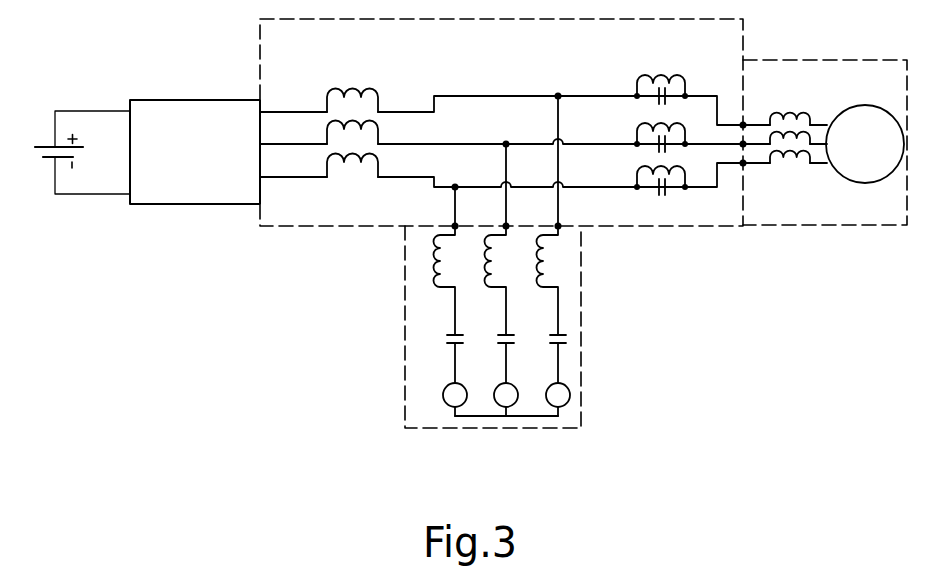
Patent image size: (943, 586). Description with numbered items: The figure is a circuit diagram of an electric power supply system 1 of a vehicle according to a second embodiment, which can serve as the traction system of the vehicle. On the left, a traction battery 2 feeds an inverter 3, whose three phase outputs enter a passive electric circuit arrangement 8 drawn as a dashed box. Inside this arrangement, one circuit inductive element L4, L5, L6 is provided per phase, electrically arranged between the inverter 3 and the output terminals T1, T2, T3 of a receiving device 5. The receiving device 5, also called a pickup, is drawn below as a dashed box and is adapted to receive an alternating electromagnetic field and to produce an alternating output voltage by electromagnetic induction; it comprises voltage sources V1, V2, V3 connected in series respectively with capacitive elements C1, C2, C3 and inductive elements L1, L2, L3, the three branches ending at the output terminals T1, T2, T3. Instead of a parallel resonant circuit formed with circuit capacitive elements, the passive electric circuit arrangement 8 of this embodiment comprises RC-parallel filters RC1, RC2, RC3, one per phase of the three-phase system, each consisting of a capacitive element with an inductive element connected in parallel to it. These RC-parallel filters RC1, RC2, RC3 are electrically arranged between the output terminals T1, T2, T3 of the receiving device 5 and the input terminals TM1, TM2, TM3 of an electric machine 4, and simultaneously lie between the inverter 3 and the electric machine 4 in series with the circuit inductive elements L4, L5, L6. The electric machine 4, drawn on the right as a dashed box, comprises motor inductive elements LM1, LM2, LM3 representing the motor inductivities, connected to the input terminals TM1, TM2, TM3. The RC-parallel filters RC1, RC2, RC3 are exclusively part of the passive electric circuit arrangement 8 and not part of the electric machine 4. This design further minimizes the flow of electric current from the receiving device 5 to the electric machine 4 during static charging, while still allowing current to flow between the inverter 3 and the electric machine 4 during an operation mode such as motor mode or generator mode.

The electric power supply system 1 is at (212, 448).
The traction battery 2 is at (43, 147).
The inverter 3 is at (200, 100).
The electric machine 4 is at (787, 60).
The receiving device 5 is at (582, 323).
The passive electric circuit arrangement 8 is at (665, 226).
The inductive element L1 is at (431, 280).
The inductive element L2 is at (483, 280).
The inductive element L3 is at (534, 280).
The circuit inductive element L4 is at (352, 154).
The circuit inductive element L5 is at (352, 120).
The circuit inductive element L6 is at (352, 87).
The capacitive element C1 is at (441, 356).
The capacitive element C2 is at (493, 356).
The capacitive element C3 is at (544, 356).
The voltage source V1 is at (444, 399).
The voltage source V2 is at (495, 399).
The voltage source V3 is at (547, 399).
The output terminal T1 is at (453, 224).
The output terminal T2 is at (504, 224).
The output terminal T3 is at (556, 224).
The RC-parallel filter RC1 is at (641, 178).
The RC-parallel filter RC2 is at (641, 135).
The RC-parallel filter RC3 is at (641, 87).
The input terminal TM1 is at (741, 165).
The input terminal TM2 is at (744, 146).
The input terminal TM3 is at (742, 123).
The motor inductive element LM1 is at (797, 153).
The motor inductive element LM2 is at (795, 130).
The motor inductive element LM3 is at (790, 107).